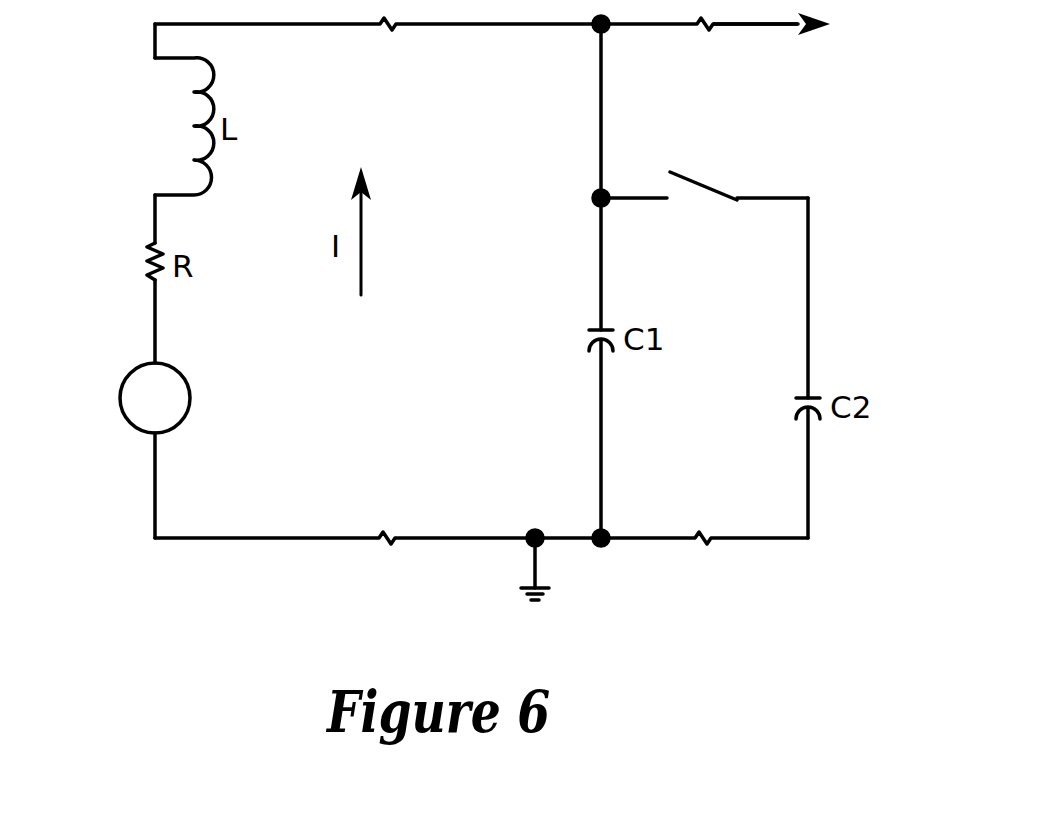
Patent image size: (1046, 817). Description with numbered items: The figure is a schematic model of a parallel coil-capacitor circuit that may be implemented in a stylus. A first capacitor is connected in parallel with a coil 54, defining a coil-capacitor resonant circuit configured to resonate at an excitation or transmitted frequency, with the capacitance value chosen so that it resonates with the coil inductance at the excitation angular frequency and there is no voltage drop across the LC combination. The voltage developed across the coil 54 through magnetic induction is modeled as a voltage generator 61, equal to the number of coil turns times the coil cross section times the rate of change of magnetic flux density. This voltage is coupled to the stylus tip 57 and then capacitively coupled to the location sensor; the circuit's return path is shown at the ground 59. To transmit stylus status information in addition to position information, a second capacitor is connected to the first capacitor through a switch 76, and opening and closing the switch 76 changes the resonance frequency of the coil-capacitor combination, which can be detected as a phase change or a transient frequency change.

The coil 54 is at (208, 147).
The stylus tip 57 is at (795, 22).
The ground 59 is at (534, 590).
The voltage generator 61 is at (120, 401).
The switch 76 is at (700, 182).